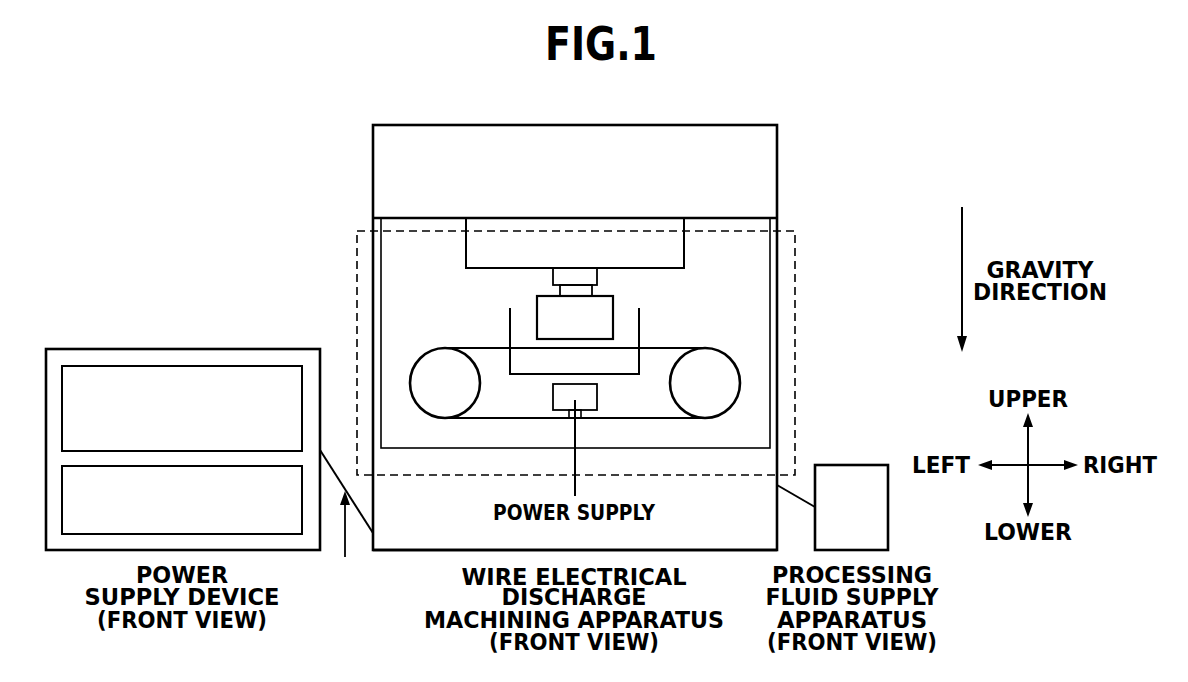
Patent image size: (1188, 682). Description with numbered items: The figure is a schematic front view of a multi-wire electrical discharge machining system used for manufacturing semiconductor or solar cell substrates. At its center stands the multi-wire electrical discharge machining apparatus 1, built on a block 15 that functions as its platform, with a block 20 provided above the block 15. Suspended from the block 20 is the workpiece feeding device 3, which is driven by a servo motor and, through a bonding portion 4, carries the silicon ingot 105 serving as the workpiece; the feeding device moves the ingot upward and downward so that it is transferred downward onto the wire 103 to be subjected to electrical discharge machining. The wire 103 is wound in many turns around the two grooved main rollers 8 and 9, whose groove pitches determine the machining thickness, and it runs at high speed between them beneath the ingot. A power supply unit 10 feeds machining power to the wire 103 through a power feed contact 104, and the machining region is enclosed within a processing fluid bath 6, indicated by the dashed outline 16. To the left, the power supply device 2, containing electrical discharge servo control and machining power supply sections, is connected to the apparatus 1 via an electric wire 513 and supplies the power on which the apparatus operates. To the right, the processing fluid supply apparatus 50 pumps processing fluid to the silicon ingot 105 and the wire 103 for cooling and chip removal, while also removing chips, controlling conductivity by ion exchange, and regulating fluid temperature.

The multi-wire electrical discharge machining apparatus 1 is at (778, 172).
The power supply device 2 is at (191, 349).
The workpiece feeding device 3 is at (597, 278).
The bonding portion 4 is at (560, 290).
The processing fluid bath 6 is at (639, 316).
The main roller 8 is at (430, 352).
The main roller 9 is at (740, 383).
The power supply unit 10 is at (553, 400).
The block 15 is at (398, 542).
The processing tank 16 is at (795, 311).
The block 20 is at (684, 250).
The processing fluid supply apparatus 50 is at (852, 465).
The wire 103 is at (675, 348).
The power feed contact 104 is at (585, 415).
The silicon ingot 105 is at (537, 310).
The electric wire 513 is at (343, 535).